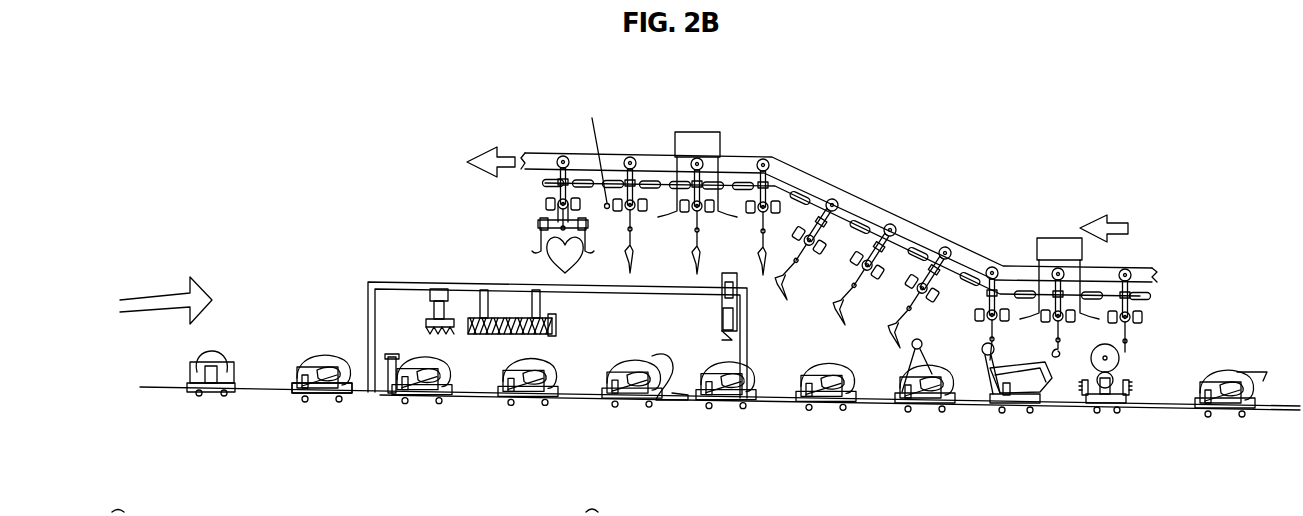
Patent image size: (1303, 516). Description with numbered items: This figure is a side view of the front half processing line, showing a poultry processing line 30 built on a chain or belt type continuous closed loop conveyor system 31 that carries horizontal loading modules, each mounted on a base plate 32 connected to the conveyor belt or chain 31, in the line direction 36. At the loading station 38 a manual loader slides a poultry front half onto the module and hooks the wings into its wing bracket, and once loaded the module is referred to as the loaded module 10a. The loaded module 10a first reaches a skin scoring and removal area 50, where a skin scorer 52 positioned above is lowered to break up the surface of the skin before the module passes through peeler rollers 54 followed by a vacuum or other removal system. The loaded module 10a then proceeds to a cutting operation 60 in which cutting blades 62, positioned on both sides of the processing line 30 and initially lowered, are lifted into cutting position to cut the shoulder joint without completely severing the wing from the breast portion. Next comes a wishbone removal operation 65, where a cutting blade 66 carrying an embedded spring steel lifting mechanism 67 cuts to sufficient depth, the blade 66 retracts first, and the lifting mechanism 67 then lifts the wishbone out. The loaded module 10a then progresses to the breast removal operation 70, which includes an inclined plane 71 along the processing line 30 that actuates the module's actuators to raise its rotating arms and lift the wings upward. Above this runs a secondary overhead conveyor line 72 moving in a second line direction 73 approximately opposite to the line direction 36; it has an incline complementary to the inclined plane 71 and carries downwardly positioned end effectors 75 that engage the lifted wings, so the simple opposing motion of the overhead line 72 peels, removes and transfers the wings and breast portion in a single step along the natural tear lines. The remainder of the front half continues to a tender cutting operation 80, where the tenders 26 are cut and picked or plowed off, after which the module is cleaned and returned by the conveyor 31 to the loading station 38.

The loaded module 10a is at (328, 353).
The tenders 26 is at (1228, 412).
The poultry processing line 30 is at (330, 265).
The continuous closed loop conveyor system 31 is at (270, 388).
The base plate 32 is at (321, 400).
The line direction 36 is at (166, 292).
The loading station 38 is at (211, 394).
The skin scoring and removal area 50 is at (441, 404).
The skin scorer 52 is at (435, 300).
The peeler rollers 54 is at (507, 328).
The cutting operation 60 is at (632, 406).
The cutting blades 62 is at (662, 360).
The wishbone removal operation 65 is at (726, 407).
The cutting blade 66 is at (722, 326).
The lifting mechanism 67 is at (722, 335).
The breast removal operation 70 is at (917, 412).
The inclined plane 71 is at (892, 392).
The secondary overhead conveyor line 72 is at (838, 182).
The second line direction 73 is at (1128, 228).
The end effectors 75 is at (1063, 343).
The tender cutting operation 80 is at (1126, 399).